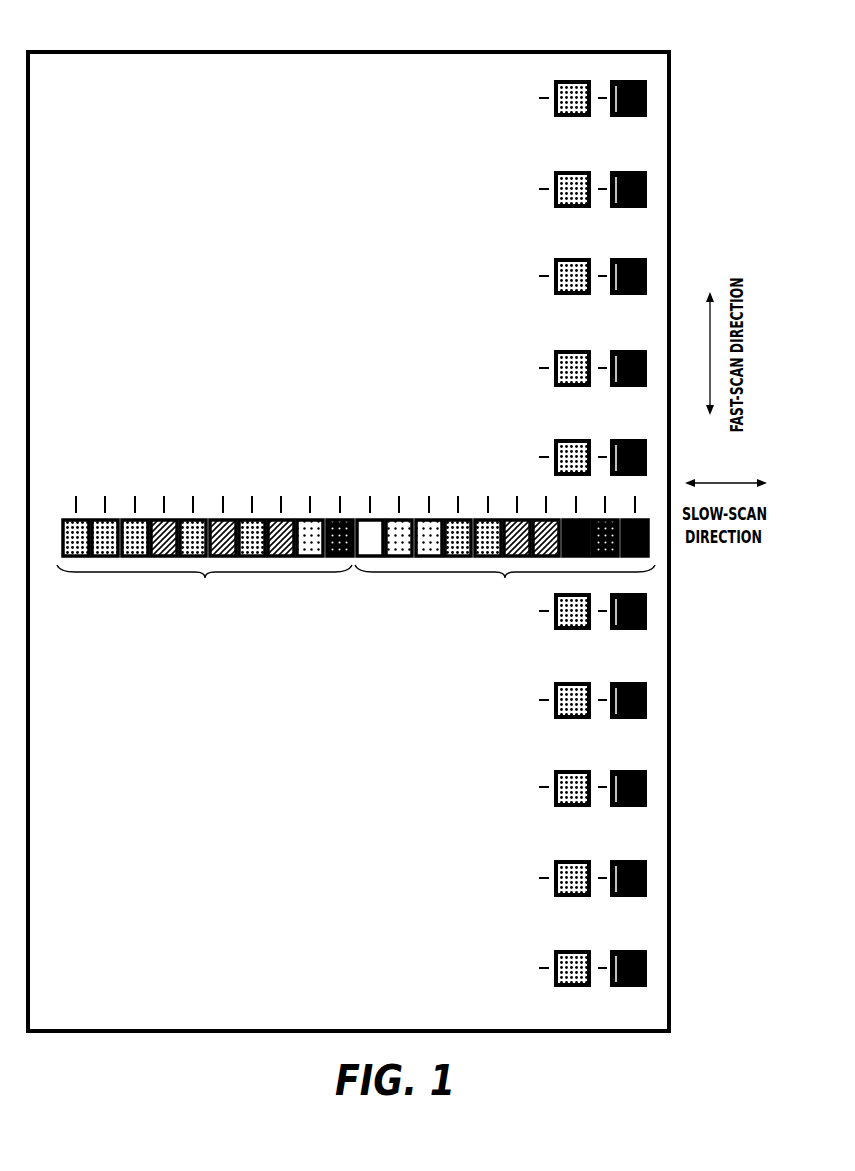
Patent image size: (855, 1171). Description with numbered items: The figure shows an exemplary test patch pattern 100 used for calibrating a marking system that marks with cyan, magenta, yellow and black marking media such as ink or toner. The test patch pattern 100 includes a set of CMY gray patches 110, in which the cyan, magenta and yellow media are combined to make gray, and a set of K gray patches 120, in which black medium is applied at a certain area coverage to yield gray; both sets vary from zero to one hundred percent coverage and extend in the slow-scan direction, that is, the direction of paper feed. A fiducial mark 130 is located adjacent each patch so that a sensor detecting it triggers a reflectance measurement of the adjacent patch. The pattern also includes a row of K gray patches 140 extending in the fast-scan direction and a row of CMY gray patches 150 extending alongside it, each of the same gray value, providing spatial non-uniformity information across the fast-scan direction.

The test patch pattern 100 is at (457, 52).
The CMY gray patches 110 is at (205, 563).
The K gray patches 120 is at (505, 562).
The fiducial mark 130 is at (430, 480).
The row of K gray patches 140 is at (555, 172).
The row of CMY gray patches 150 is at (644, 170).